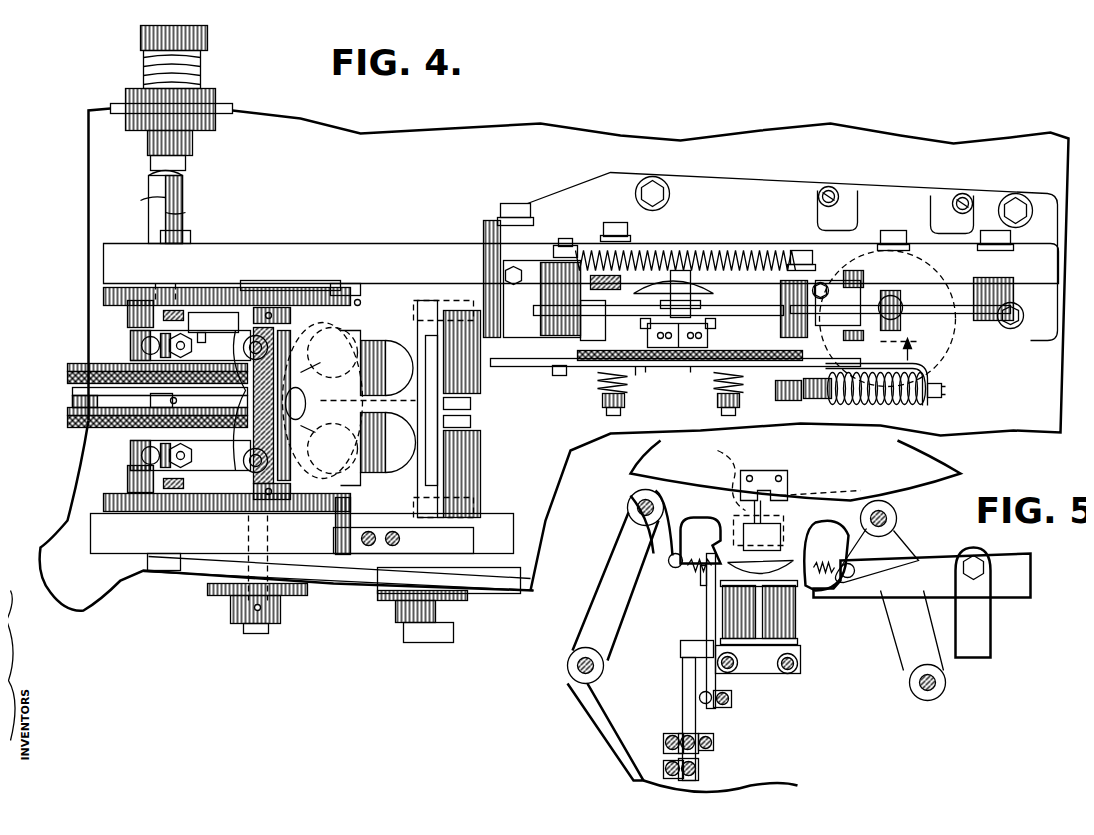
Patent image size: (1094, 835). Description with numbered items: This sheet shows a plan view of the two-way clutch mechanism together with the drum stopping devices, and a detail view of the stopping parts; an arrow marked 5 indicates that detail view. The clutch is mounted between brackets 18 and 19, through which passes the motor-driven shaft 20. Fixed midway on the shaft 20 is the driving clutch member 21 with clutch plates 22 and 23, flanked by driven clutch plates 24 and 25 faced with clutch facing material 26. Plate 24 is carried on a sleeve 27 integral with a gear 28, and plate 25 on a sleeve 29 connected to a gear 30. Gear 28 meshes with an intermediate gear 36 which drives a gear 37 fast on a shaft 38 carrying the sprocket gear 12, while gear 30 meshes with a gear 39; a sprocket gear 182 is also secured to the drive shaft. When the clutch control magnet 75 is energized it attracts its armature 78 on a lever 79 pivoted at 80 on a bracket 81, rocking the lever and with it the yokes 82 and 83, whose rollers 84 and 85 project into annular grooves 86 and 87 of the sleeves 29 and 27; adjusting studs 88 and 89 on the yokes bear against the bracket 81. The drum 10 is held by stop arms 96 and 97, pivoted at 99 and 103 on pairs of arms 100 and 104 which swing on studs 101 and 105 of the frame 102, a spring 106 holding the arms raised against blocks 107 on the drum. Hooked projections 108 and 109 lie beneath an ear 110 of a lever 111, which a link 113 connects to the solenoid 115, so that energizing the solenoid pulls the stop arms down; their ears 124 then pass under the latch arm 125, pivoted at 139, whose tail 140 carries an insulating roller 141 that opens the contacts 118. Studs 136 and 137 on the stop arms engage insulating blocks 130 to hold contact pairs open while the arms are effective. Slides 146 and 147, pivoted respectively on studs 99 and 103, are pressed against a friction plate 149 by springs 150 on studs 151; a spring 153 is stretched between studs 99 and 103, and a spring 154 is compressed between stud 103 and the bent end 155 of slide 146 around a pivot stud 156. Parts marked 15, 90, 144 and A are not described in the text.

In FIG. 4, the section line 5 is at (702, 282).
In FIG. 5, the drum 10 is at (640, 473).
In FIG. 4, the sprocket gear 12 is at (300, 595).
In FIG. 4, the bolt 15 is at (390, 595).
In FIG. 4, the bracket 18 is at (103, 265).
In FIG. 4, the bracket 19 is at (100, 538).
In FIG. 4, the shaft 20 is at (182, 190).
In FIG. 4, the driving clutch member 21 is at (95, 402).
In FIG. 4, the clutch plate 22 is at (90, 388).
In FIG. 4, the clutch plate 23 is at (75, 410).
In FIG. 4, the driven clutch plate 24 is at (75, 365).
In FIG. 4, the driven clutch plate 25 is at (75, 425).
In FIG. 4, the clutch facing material 26 is at (67, 375).
In FIG. 4, the sleeve 27 is at (130, 313).
In FIG. 4, the gear 28 is at (103, 295).
In FIG. 4, the sleeve 29 is at (133, 478).
In FIG. 4, the gear 30 is at (97, 500).
In FIG. 4, the intermediate gear 36 is at (201, 329).
In FIG. 4, the gear 37 is at (320, 297).
In FIG. 4, the shaft 38 is at (262, 400).
In FIG. 4, the gear 39 is at (213, 513).
In FIG. 4, the clutch control magnet 75 is at (460, 462).
In FIG. 4, the armature 78 is at (470, 423).
In FIG. 4, the lever 79 is at (455, 413).
In FIG. 4, the pivot 80 is at (302, 420).
In FIG. 4, the bracket 81 is at (300, 365).
In FIG. 4, the yoke 82 is at (205, 458).
In FIG. 4, the yoke 83 is at (240, 345).
In FIG. 4, the roller 84 is at (168, 457).
In FIG. 4, the roller 85 is at (168, 347).
In FIG. 4, the annular groove 86 is at (140, 452).
In FIG. 4, the annular groove 87 is at (140, 340).
In FIG. 4, the adjusting stud 88 is at (323, 445).
In FIG. 4, the adjusting stud 89 is at (325, 360).
In FIG. 4, the coil 90 is at (470, 370).
In FIG. 4, the stop arm 96 is at (610, 310).
In FIG. 5, the stop arm 96 is at (688, 497).
In FIG. 4, the stop arm 97 is at (765, 312).
In FIG. 5, the stop arm 97 is at (830, 503).
In FIG. 4, the stud 99 is at (565, 245).
In FIG. 5, the stud 99 is at (627, 507).
In FIG. 4, the arms 100 is at (545, 285).
In FIG. 5, the arms 100 is at (606, 640).
In FIG. 5, the stud 101 is at (567, 665).
In FIG. 4, the frame 102 is at (800, 250).
In FIG. 5, the frame 102 is at (608, 715).
In FIG. 4, the stud 103 is at (792, 250).
In FIG. 5, the stud 103 is at (896, 518).
In FIG. 4, the arms 104 is at (848, 273).
In FIG. 5, the arms 104 is at (900, 637).
In FIG. 5, the stud 105 is at (910, 687).
In FIG. 5, the spring 106 is at (683, 573).
In FIG. 5, the block 107 is at (775, 473).
In FIG. 5, the hooked projection 108 is at (722, 545).
In FIG. 5, the hooked projection 109 is at (800, 590).
In FIG. 4, the ear 110 is at (672, 313).
In FIG. 5, the ear 110 is at (795, 560).
In FIG. 4, the lever 111 is at (930, 322).
In FIG. 5, the lever 111 is at (933, 570).
In FIG. 4, the link 113 is at (893, 310).
In FIG. 5, the link 113 is at (975, 617).
In FIG. 4, the solenoid 115 is at (935, 345).
In FIG. 5, the contacts 118 is at (685, 675).
In FIG. 4, the ear 124 is at (680, 275).
In FIG. 5, the ear 124 is at (725, 465).
In FIG. 4, the latch arm 125 is at (665, 270).
In FIG. 5, the latch arm 125 is at (795, 535).
In FIG. 4, the insulating block 130 is at (647, 340).
In FIG. 4, the stud 136 is at (645, 323).
In FIG. 4, the stud 137 is at (705, 325).
In FIG. 5, the pivot 139 is at (703, 585).
In FIG. 5, the tail 140 is at (708, 615).
In FIG. 5, the insulating roller 141 is at (690, 650).
In FIG. 5, the solenoid coil 144 is at (785, 635).
In FIG. 4, the slide 146 is at (635, 365).
In FIG. 4, the slide 147 is at (645, 362).
In FIG. 4, the friction plate 149 is at (690, 365).
In FIG. 4, the spring 150 is at (600, 385).
In FIG. 4, the stud 151 is at (605, 408).
In FIG. 4, the spring 153 is at (735, 255).
In FIG. 4, the spring 154 is at (870, 395).
In FIG. 4, the bent end 155 is at (928, 380).
In FIG. 4, the pivot stud 156 is at (940, 392).
In FIG. 4, the sprocket gear 182 is at (215, 110).
In FIG. 5, the solenoid A is at (780, 617).